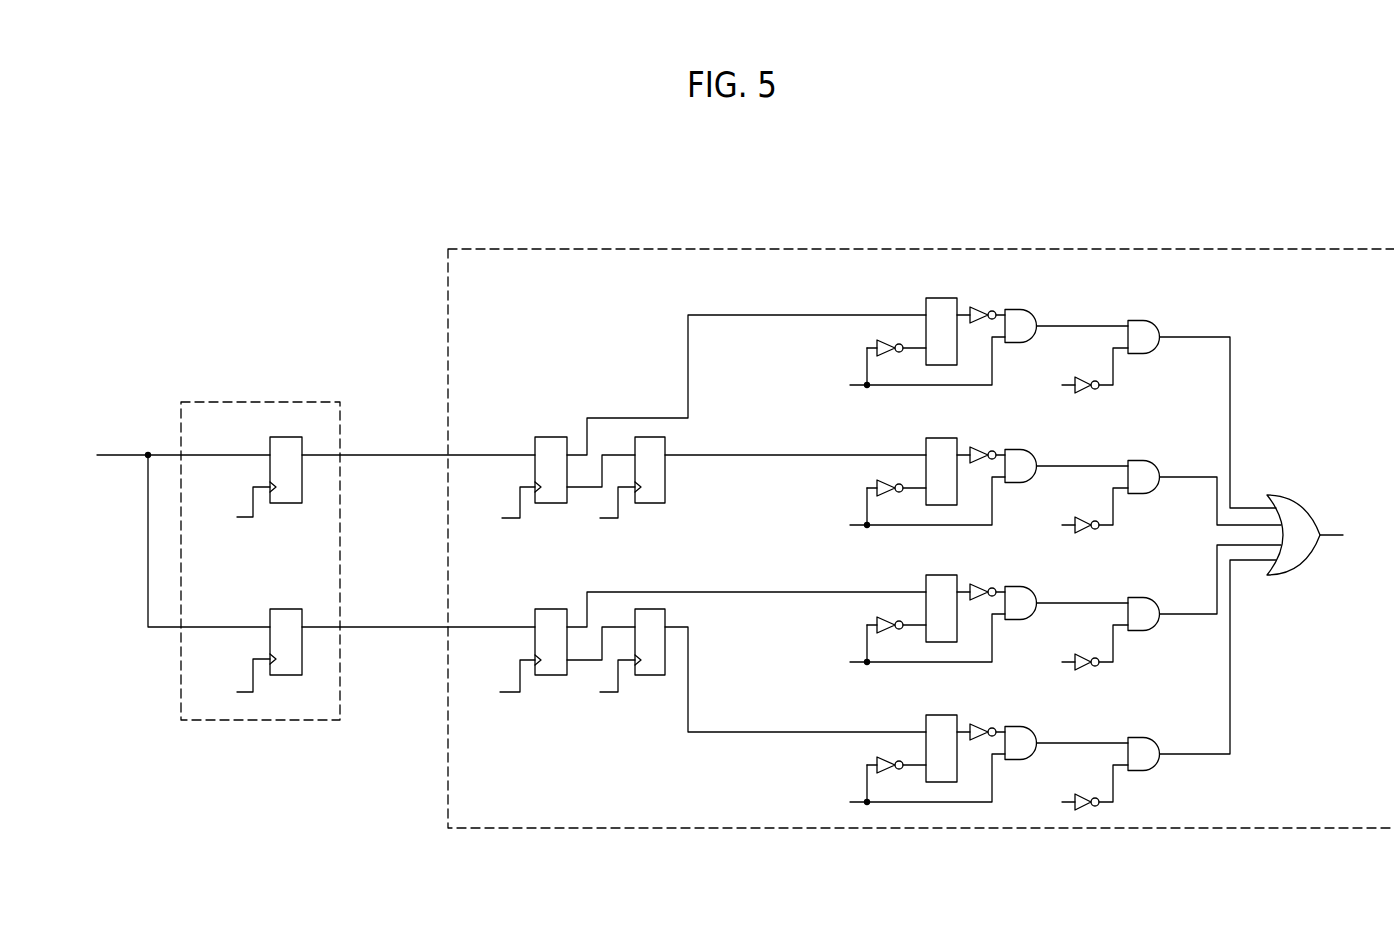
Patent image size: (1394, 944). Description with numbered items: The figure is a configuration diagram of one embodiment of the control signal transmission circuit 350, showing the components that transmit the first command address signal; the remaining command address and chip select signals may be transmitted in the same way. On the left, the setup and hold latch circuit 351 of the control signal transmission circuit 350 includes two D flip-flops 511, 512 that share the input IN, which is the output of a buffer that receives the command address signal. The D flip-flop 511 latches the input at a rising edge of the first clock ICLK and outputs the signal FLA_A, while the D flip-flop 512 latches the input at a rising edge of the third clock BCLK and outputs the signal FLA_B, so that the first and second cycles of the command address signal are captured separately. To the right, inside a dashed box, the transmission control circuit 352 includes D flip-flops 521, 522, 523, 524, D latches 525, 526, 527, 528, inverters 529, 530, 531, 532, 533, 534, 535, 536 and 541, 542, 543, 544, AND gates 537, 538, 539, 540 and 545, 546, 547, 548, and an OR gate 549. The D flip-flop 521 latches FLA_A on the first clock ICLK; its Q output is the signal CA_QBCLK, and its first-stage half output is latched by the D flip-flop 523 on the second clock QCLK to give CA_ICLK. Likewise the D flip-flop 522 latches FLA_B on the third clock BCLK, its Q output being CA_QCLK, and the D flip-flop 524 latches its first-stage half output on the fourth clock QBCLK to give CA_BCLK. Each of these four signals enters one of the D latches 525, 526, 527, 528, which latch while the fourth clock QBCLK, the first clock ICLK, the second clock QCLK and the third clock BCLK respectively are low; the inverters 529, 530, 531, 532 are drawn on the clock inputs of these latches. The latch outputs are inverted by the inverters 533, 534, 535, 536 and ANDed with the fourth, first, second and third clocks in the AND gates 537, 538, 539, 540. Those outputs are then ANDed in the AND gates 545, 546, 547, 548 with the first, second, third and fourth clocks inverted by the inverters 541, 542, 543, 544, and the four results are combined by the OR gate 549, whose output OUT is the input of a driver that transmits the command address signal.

The control signal transmission circuit 350 is at (362, 265).
The setup and hold latch circuit 351 is at (293, 402).
The transmission control circuit 352 is at (1090, 249).
The D flip-flop 511 is at (288, 437).
The D flip-flop 512 is at (288, 609).
The D flip-flop 521 is at (541, 437).
The D flip-flop 522 is at (541, 609).
The D flip-flop 523 is at (667, 489).
The D flip-flop 524 is at (650, 676).
The D latch 525 is at (939, 297).
The D latch 526 is at (928, 455).
The D latch 527 is at (928, 592).
The D latch 528 is at (928, 732).
The inverter 529 is at (876, 342).
The inverter 530 is at (879, 477).
The inverter 531 is at (879, 614).
The inverter 532 is at (879, 754).
The inverter 533 is at (978, 306).
The inverter 534 is at (986, 434).
The inverter 535 is at (986, 571).
The inverter 536 is at (986, 711).
The AND gate 537 is at (1016, 310).
The AND gate 538 is at (1031, 452).
The AND gate 539 is at (1031, 589).
The AND gate 540 is at (1031, 729).
The inverter 541 is at (1083, 377).
The inverter 542 is at (1100, 502).
The inverter 543 is at (1100, 639).
The inverter 544 is at (1100, 779).
The AND gate 545 is at (1140, 321).
The AND gate 546 is at (1154, 463).
The AND gate 547 is at (1154, 600).
The AND gate 548 is at (1154, 740).
The OR gate 549 is at (1299, 495).